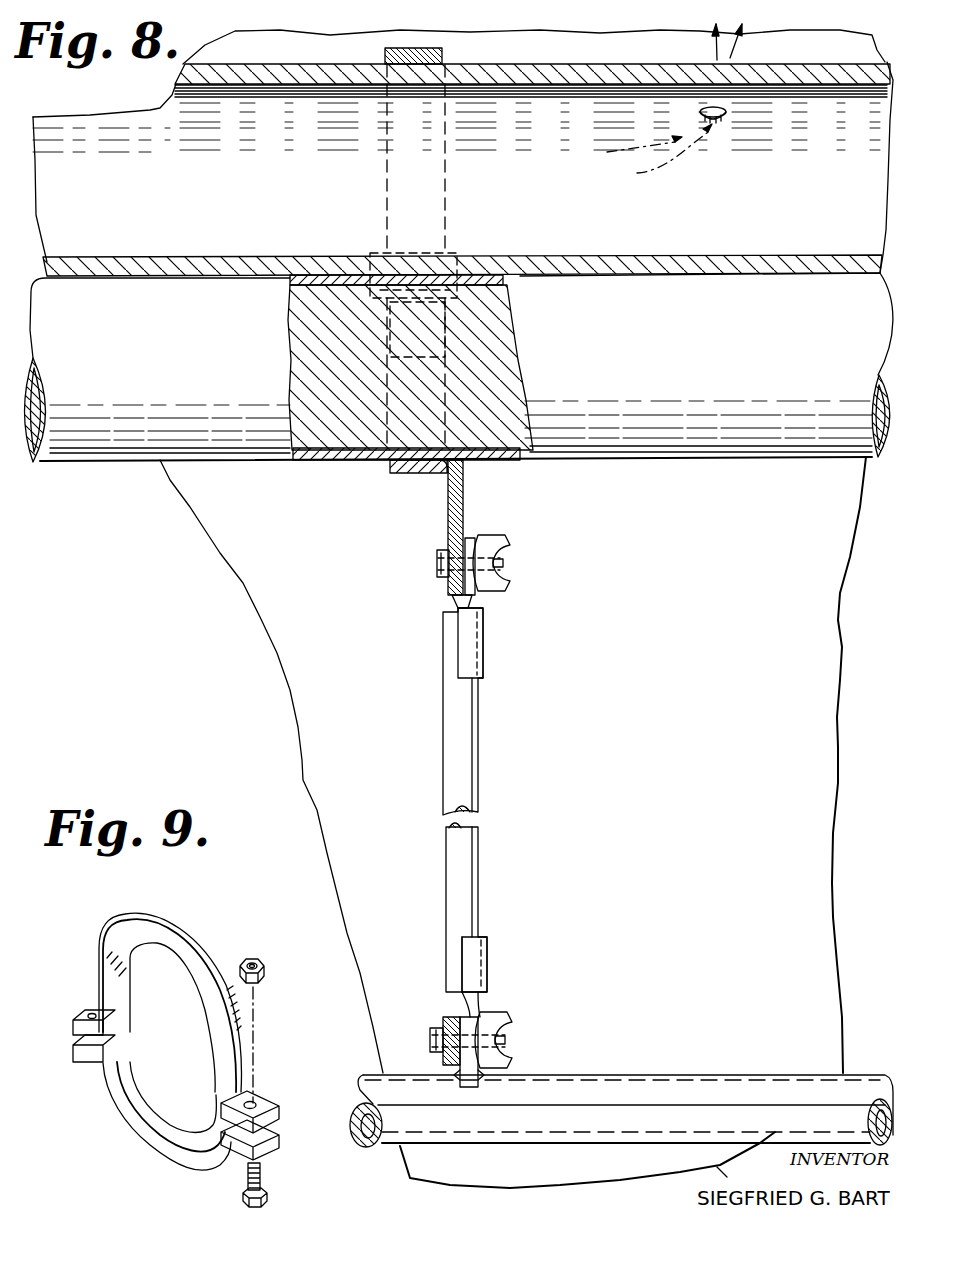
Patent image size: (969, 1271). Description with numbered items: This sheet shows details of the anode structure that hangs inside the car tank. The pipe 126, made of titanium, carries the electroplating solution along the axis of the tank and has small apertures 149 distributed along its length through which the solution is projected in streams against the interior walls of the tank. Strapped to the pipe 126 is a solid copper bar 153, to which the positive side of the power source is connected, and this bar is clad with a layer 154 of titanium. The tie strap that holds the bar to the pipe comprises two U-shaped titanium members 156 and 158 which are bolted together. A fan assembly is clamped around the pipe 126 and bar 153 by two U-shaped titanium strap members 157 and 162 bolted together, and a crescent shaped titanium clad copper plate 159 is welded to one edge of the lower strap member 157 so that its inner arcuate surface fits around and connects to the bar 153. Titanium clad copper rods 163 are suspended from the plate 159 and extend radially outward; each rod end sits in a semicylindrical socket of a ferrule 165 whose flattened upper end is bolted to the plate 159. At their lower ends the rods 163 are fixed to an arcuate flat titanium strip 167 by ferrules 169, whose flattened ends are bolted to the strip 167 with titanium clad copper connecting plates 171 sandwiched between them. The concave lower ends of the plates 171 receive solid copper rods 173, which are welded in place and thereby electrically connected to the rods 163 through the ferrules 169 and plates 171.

In FIG. 8, the pipe 126 is at (162, 268).
In FIG. 8, the apertures 149 is at (722, 122).
In FIG. 8, the copper bar 153 is at (672, 436).
In FIG. 8, the titanium layer 154 is at (343, 460).
In FIG. 9, the U-shaped titanium member 156 is at (170, 1163).
In FIG. 8, the lower titanium strap member 157 is at (415, 474).
In FIG. 9, the U-shaped titanium member 158 is at (180, 940).
In FIG. 8, the crescent shaped titanium clad copper plate 159 is at (467, 508).
In FIG. 8, the upper titanium strap member 162 is at (392, 52).
In FIG. 8, the titanium clad copper rods 163 is at (455, 772).
In FIG. 8, the titanium clad copper ferrules 165 is at (480, 636).
In FIG. 8, the arcuate flat titanium strip 167 is at (447, 1018).
In FIG. 8, the titanium clad copper ferrules 169 is at (488, 962).
In FIG. 8, the titanium clad copper connecting plates 171 is at (466, 1052).
In FIG. 8, the solid copper rods 173 is at (562, 1128).